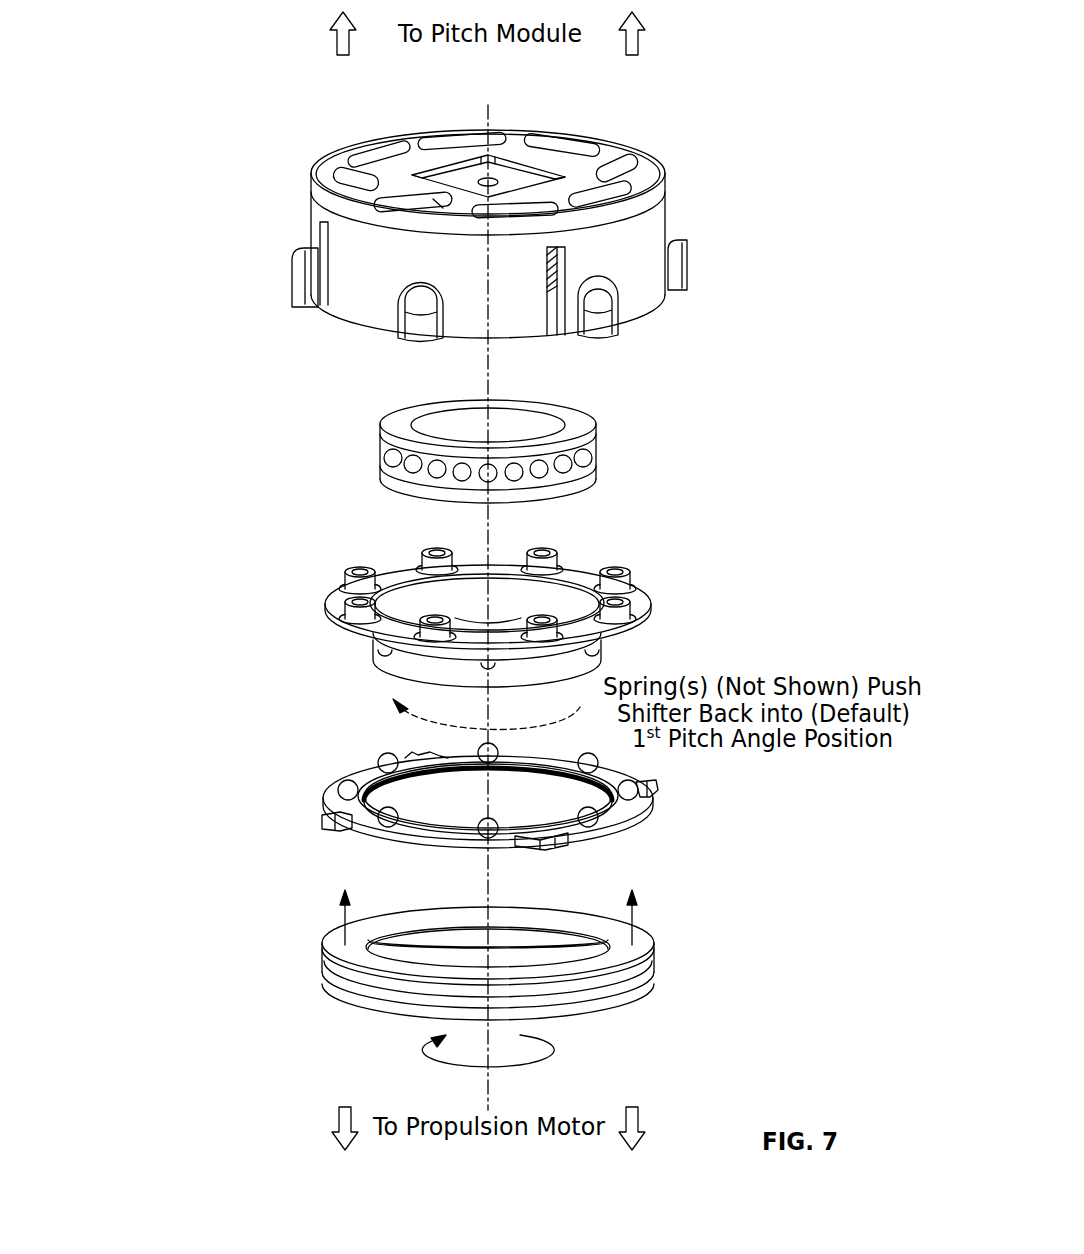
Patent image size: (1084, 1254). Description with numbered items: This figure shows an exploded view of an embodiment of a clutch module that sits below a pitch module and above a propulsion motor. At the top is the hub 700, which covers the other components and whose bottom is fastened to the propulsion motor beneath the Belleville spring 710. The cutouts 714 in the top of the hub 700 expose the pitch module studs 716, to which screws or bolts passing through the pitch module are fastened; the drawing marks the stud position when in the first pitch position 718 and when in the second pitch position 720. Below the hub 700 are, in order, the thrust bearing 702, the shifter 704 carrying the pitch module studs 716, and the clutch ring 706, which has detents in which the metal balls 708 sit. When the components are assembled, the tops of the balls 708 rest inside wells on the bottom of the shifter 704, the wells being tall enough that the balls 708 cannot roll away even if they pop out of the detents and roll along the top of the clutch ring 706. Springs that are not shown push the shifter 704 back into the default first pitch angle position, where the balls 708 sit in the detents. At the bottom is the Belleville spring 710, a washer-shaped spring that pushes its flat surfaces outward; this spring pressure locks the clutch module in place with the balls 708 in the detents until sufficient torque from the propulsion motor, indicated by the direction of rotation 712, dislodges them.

The hub 700 is at (667, 222).
The thrust bearing 702 is at (685, 408).
The shifter 704 is at (652, 606).
The clutch ring 706 is at (655, 790).
The metal balls 708 is at (345, 786).
The Belleville spring 710 is at (762, 947).
The direction of rotation from propulsion motor 712 is at (488, 1100).
The cutouts 714 is at (368, 150).
The pitch module studs 716 is at (353, 570).
The first pitch position 718 is at (391, 201).
The second pitch position 720 is at (434, 205).